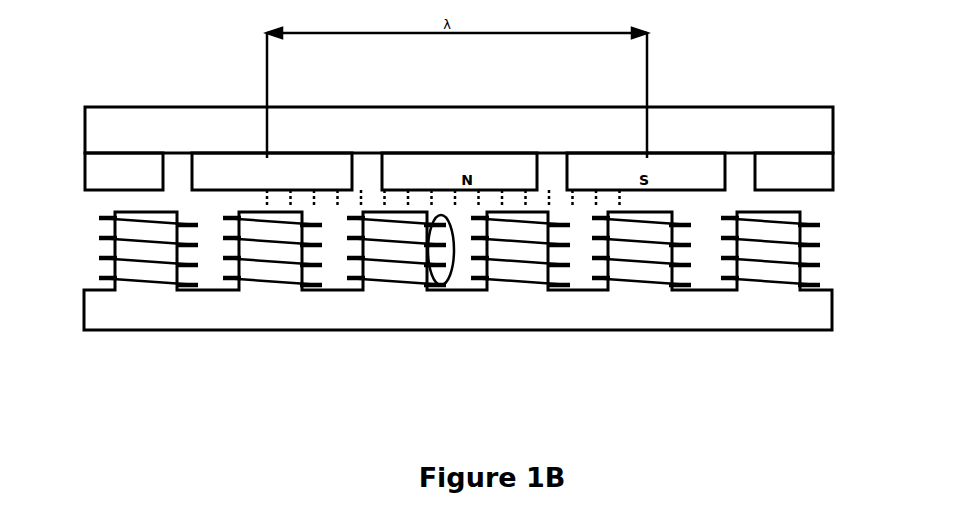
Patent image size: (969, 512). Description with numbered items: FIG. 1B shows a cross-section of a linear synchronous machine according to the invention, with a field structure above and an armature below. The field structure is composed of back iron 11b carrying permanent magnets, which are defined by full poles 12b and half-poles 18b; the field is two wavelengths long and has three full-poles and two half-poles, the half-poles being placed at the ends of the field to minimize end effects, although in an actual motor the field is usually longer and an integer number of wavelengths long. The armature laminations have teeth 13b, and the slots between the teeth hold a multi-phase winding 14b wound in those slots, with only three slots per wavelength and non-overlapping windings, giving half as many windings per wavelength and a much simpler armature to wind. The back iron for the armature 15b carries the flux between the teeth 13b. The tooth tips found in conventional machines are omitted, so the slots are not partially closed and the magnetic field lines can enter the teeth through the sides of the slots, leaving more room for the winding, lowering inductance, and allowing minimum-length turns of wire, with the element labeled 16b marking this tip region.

The back iron 11b is at (127, 128).
The pole 12b is at (208, 173).
The tooth 13b is at (377, 247).
The winding 14b is at (446, 284).
The back iron for the armature 15b is at (476, 317).
The end magnet 16b is at (93, 155).
The half-pole 18b is at (782, 167).